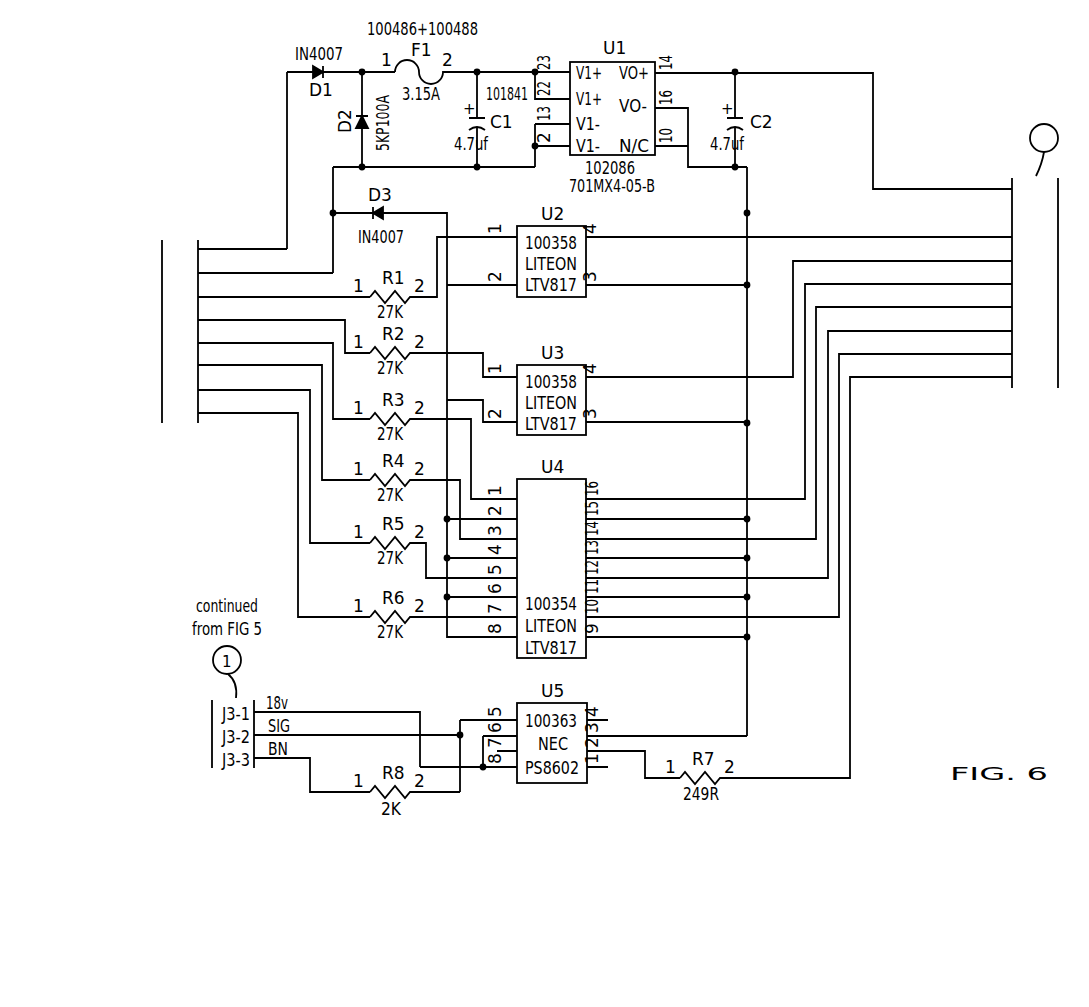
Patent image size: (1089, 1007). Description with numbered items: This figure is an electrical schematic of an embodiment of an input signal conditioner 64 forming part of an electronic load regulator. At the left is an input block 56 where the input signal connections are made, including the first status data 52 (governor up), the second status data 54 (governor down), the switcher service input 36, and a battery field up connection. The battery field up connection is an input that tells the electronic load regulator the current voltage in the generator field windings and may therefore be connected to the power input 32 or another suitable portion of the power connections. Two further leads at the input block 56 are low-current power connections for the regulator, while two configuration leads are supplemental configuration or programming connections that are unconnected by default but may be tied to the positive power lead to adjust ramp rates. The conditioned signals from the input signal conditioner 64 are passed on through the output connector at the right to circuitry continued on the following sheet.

The power input 32 is at (259, 282).
The first status data 52 is at (259, 305).
The second status data 54 is at (259, 328).
The switcher service input 36 is at (259, 350).
The input block 56 is at (195, 180).
The input signal conditioner 64 is at (914, 67).